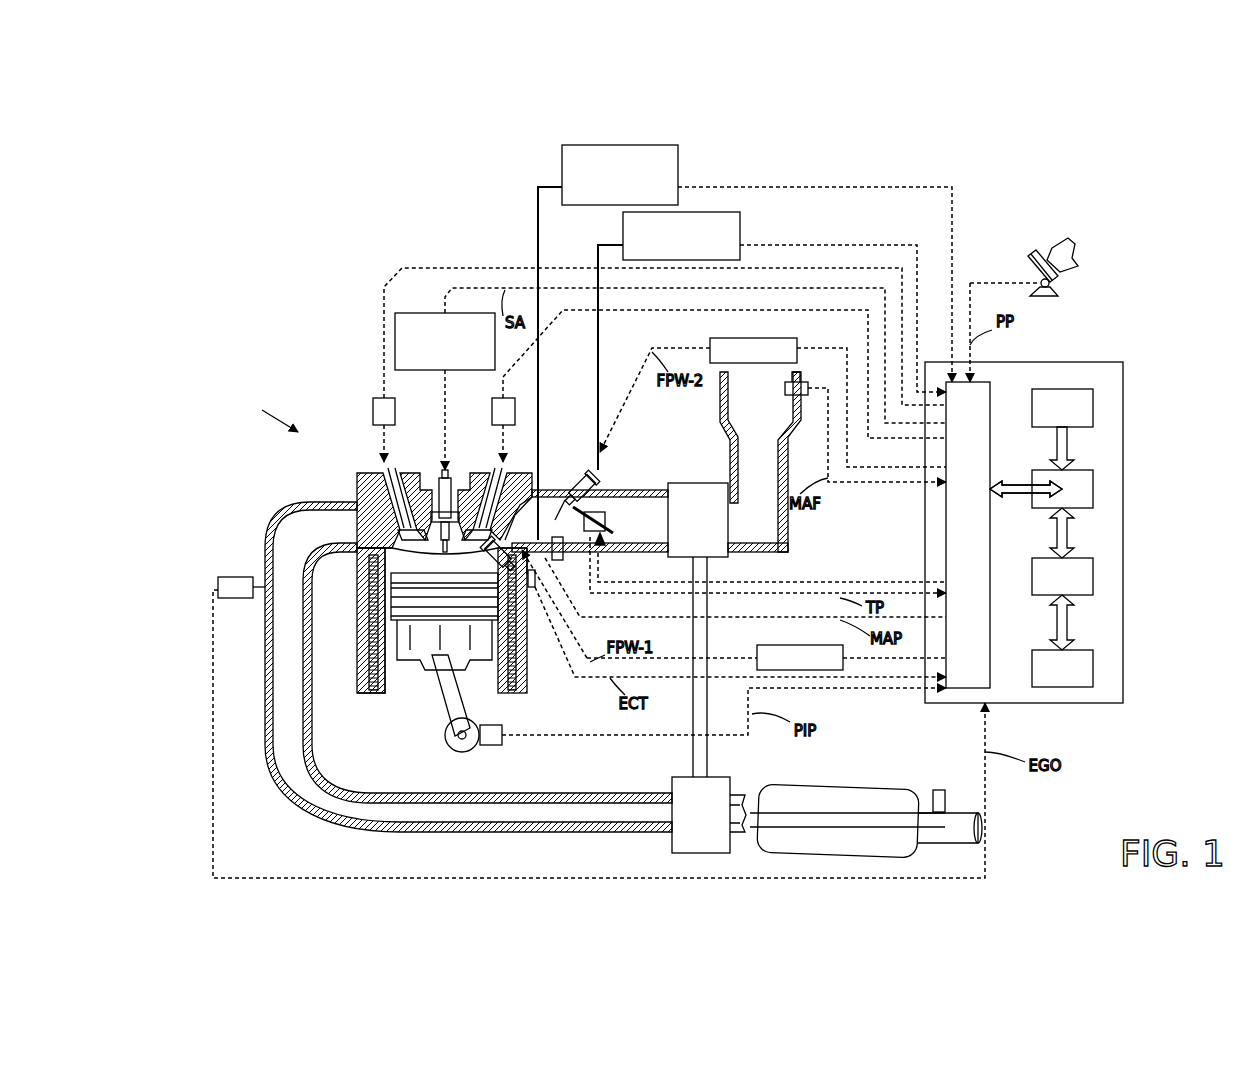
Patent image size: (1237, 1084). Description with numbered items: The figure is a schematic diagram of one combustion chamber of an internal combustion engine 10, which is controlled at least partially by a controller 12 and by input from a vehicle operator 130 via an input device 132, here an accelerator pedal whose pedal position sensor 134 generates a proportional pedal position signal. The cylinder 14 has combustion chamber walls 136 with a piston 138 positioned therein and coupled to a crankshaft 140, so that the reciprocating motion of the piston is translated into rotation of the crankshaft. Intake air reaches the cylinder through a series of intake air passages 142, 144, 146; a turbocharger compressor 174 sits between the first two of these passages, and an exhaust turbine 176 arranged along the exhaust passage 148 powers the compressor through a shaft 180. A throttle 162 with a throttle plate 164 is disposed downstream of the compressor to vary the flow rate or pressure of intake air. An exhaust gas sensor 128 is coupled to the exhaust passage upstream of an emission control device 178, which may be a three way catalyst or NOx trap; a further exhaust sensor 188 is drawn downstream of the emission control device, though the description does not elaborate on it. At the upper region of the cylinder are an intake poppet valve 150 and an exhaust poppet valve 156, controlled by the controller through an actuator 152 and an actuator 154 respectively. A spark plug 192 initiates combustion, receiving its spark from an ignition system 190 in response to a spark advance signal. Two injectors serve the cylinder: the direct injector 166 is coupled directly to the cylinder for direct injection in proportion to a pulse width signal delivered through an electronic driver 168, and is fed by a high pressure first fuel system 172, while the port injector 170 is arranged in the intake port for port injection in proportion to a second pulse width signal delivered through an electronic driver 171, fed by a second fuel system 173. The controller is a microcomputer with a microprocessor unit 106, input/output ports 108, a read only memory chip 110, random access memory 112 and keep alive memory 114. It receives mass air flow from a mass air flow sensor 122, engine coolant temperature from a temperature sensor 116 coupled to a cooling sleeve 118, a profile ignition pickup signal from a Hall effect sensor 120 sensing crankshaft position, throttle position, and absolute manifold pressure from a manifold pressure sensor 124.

The internal combustion engine 10 is at (265, 414).
The controller 12 is at (1123, 366).
The cylinder 14 is at (357, 580).
The microprocessor unit 106 is at (1093, 490).
The input/output ports 108 is at (990, 390).
The read only memory chip 110 is at (1093, 406).
The random access memory 112 is at (1093, 576).
The keep alive memory 114 is at (1093, 668).
The temperature sensor 116 is at (520, 640).
The cooling sleeve 118 is at (528, 640).
The Hall effect sensor 120 is at (496, 748).
The mass air flow sensor 122 is at (806, 384).
The manifold pressure sensor 124 is at (558, 565).
The exhaust gas sensor 128 is at (218, 586).
The vehicle operator 130 is at (1074, 254).
The input device 132 is at (1030, 264).
The pedal position sensor 134 is at (1052, 283).
The combustion chamber walls 136 is at (380, 694).
The piston 138 is at (430, 660).
The crankshaft 140 is at (455, 751).
The intake air passage 142 is at (760, 462).
The intake air passage 144 is at (650, 521).
The intake air passage 146 is at (536, 518).
The exhaust passage 148 is at (468, 667).
The intake poppet valve 150 is at (468, 520).
The actuator 152 is at (492, 415).
The actuator 154 is at (373, 408).
The exhaust poppet valve 156 is at (392, 502).
The throttle 162 is at (598, 505).
The throttle plate 164 is at (570, 500).
The injector 166 is at (533, 592).
The electronic driver 168 is at (757, 650).
The injector 170 is at (588, 480).
The electronic driver 171 is at (712, 345).
The fuel system-1 172 is at (678, 152).
The fuel system-2 173 is at (740, 220).
The compressor 174 is at (684, 483).
The exhaust turbine 176 is at (672, 845).
The emission control device 178 is at (838, 792).
The shaft 180 is at (710, 750).
The exhaust sensor 188 is at (946, 798).
The ignition system 190 is at (410, 313).
The spark plug 192 is at (440, 500).